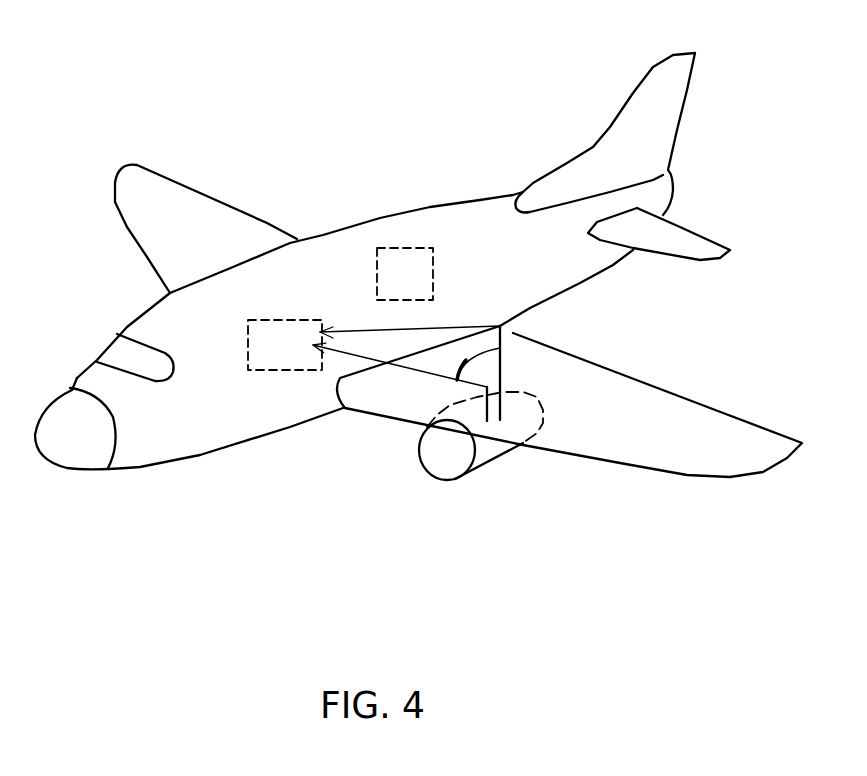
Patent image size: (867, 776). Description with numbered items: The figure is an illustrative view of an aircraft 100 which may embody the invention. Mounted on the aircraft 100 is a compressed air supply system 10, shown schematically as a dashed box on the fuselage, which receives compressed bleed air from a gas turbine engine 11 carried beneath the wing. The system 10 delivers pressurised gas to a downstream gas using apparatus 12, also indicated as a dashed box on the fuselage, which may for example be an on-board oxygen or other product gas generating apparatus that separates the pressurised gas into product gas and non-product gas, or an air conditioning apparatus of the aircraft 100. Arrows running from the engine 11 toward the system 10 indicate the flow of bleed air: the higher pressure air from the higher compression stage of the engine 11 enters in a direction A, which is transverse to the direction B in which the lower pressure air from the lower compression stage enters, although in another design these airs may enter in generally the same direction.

The aircraft 100 is at (215, 482).
The compressed air supply system 10 is at (278, 370).
The gas turbine engine 11 is at (438, 467).
The downstream gas using apparatus 12 is at (433, 267).
The direction of higher pressure air entry A is at (513, 334).
The direction of lower pressure air entry B is at (443, 323).